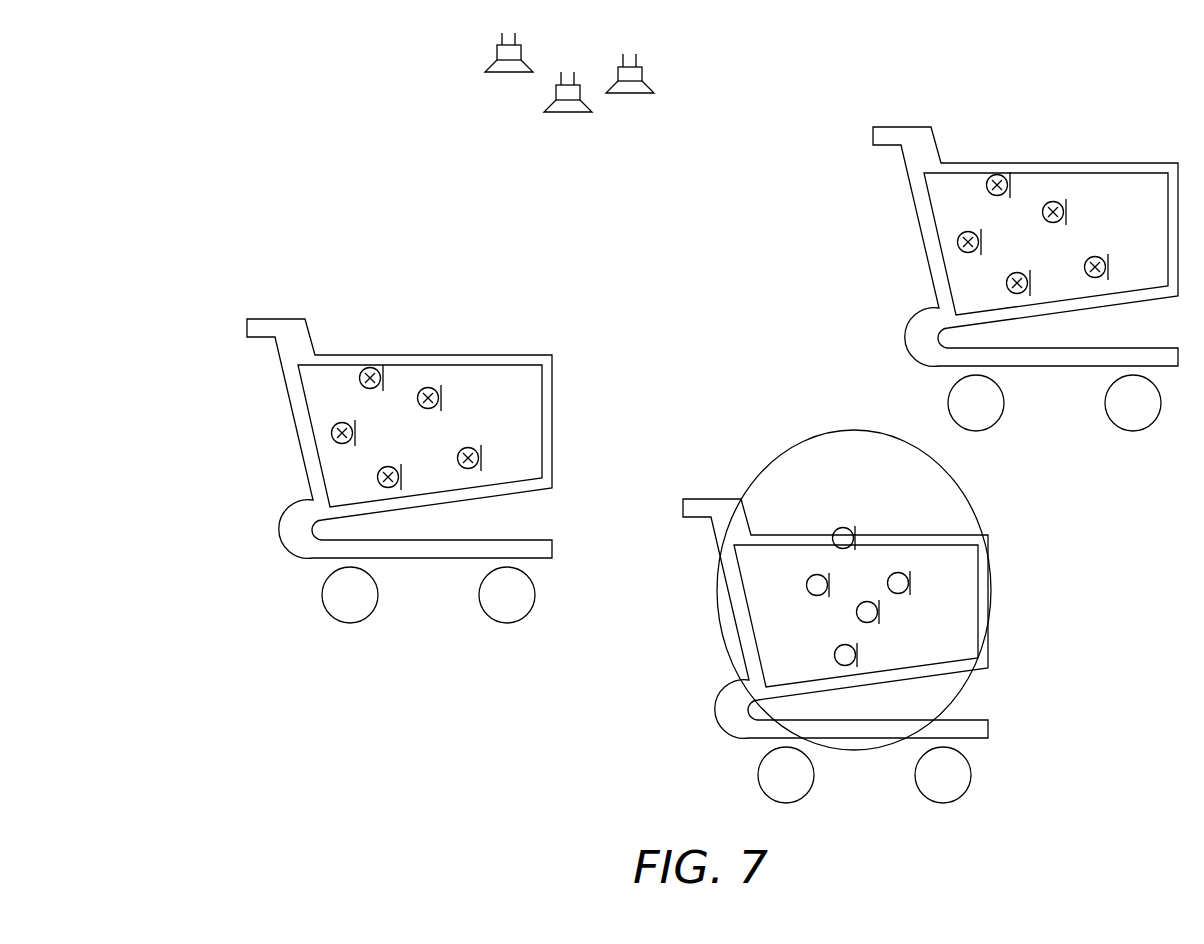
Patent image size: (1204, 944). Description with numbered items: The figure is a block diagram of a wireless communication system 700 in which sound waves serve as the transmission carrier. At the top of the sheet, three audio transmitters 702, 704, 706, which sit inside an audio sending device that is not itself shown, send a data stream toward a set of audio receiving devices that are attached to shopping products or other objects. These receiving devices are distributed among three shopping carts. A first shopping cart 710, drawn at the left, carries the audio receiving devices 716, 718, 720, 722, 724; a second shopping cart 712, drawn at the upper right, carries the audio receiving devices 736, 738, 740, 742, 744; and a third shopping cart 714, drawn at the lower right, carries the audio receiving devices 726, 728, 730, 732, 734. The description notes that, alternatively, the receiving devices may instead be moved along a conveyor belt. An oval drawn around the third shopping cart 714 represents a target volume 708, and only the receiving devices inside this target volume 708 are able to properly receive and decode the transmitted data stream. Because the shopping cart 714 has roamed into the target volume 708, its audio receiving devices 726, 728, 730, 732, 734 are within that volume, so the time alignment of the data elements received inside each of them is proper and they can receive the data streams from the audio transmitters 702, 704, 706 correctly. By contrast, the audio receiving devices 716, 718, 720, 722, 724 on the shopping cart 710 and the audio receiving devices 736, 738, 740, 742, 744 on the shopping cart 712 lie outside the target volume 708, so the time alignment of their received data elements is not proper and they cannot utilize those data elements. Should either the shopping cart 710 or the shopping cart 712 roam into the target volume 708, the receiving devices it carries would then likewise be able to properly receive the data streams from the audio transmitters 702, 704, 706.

The wireless communication system 700 is at (253, 135).
The audio transmitter 702 is at (511, 72).
The audio transmitter 704 is at (569, 112).
The audio transmitter 706 is at (632, 93).
The target volume 708 is at (800, 442).
The shopping cart 710 is at (433, 355).
The shopping cart 712 is at (905, 170).
The shopping cart 714 is at (726, 712).
The audio receiving device 716 is at (359, 378).
The audio receiving device 718 is at (342, 444).
The audio receiving device 720 is at (388, 466).
The audio receiving device 722 is at (461, 448).
The audio receiving device 724 is at (442, 398).
The audio receiving device 726 is at (843, 527).
The audio receiving device 728 is at (806, 585).
The audio receiving device 730 is at (834, 655).
The audio receiving device 732 is at (856, 613).
The audio receiving device 734 is at (907, 594).
The audio receiving device 736 is at (992, 196).
The audio receiving device 738 is at (1067, 212).
The audio receiving device 740 is at (1091, 256).
The audio receiving device 742 is at (974, 253).
The audio receiving device 744 is at (1017, 272).